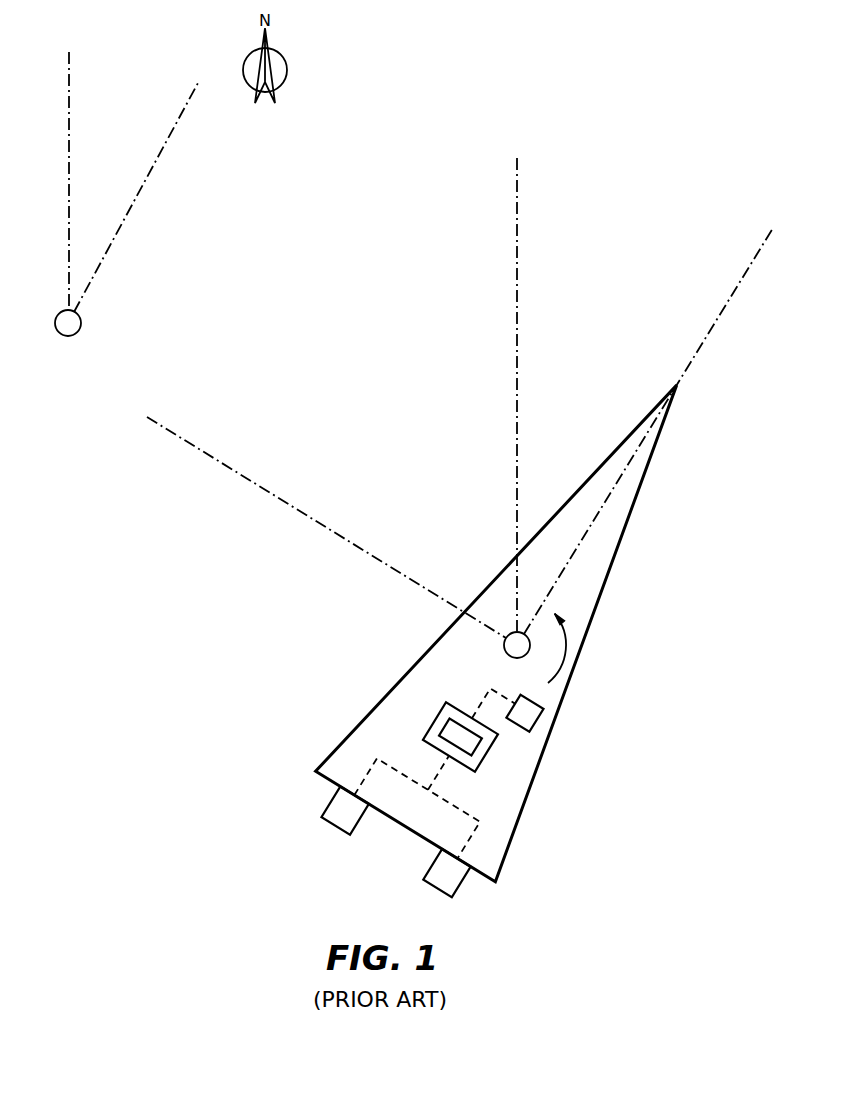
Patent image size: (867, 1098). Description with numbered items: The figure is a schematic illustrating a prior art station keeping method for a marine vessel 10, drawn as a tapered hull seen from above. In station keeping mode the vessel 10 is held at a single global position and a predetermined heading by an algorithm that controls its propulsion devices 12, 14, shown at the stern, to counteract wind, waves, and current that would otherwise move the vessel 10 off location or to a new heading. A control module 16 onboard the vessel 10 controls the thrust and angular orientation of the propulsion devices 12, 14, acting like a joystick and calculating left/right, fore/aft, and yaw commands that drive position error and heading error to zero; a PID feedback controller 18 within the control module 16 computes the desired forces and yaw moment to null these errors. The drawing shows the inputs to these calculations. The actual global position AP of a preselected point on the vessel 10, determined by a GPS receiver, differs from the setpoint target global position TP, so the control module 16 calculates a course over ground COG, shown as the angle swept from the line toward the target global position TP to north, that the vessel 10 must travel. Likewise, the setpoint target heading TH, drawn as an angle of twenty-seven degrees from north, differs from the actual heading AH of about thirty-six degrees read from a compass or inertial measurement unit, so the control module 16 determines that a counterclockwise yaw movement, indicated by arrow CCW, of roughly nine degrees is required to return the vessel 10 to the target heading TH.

The marine vessel 10 is at (610, 578).
The propulsion device 12 is at (328, 805).
The propulsion device 14 is at (434, 868).
The control module 16 is at (487, 760).
The feedback controller 18 is at (448, 727).
The actual global position AP is at (505, 651).
The target global position TP is at (79, 332).
The target heading TH is at (69, 88).
The actual heading AH is at (517, 181).
The course over ground COG is at (517, 235).
The counterclockwise yaw movement CCW is at (567, 634).